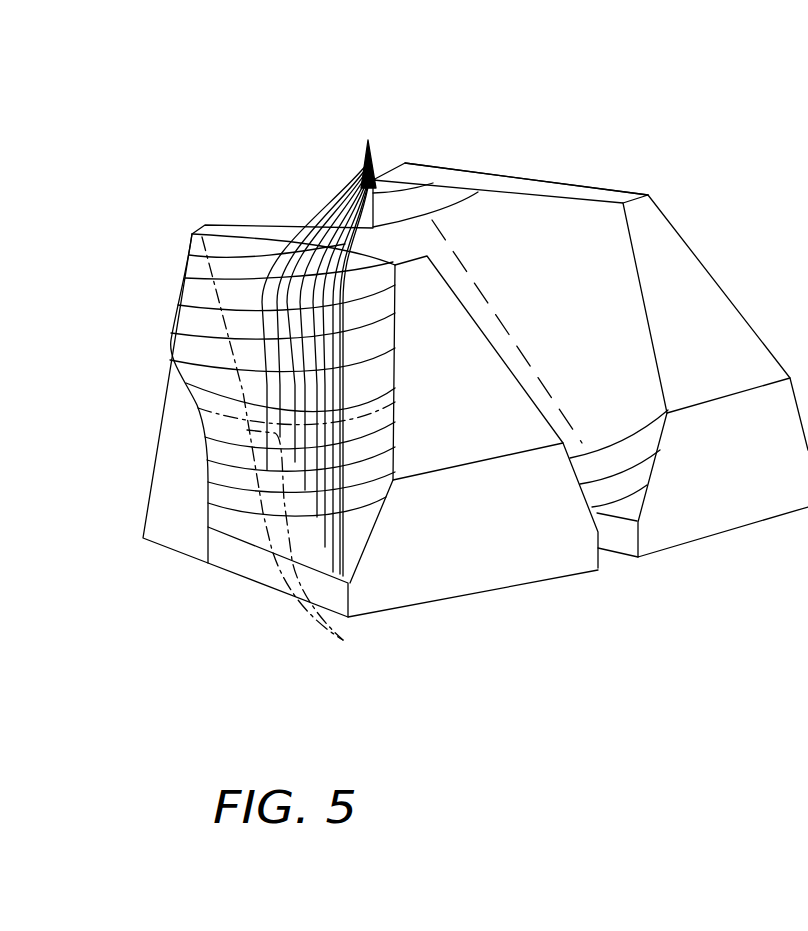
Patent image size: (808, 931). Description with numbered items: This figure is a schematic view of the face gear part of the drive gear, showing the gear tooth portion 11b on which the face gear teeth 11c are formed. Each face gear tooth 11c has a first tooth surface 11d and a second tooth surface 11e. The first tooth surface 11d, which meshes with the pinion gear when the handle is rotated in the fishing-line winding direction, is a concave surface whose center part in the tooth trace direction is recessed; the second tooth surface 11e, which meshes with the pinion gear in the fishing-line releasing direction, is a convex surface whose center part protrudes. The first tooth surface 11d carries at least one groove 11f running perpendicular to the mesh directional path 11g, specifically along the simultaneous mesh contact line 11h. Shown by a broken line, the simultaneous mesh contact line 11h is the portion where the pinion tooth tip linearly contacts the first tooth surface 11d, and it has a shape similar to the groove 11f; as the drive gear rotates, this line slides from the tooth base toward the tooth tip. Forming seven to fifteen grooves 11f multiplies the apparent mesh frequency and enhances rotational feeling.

The gear tooth portion 11b is at (140, 178).
The face gear tooth 11c is at (210, 218).
The first tooth surface 11d is at (250, 324).
The second tooth surface 11e is at (463, 297).
The groove 11f is at (503, 640).
The mesh directional path 11g is at (302, 540).
The simultaneous mesh contact line 11h is at (243, 392).